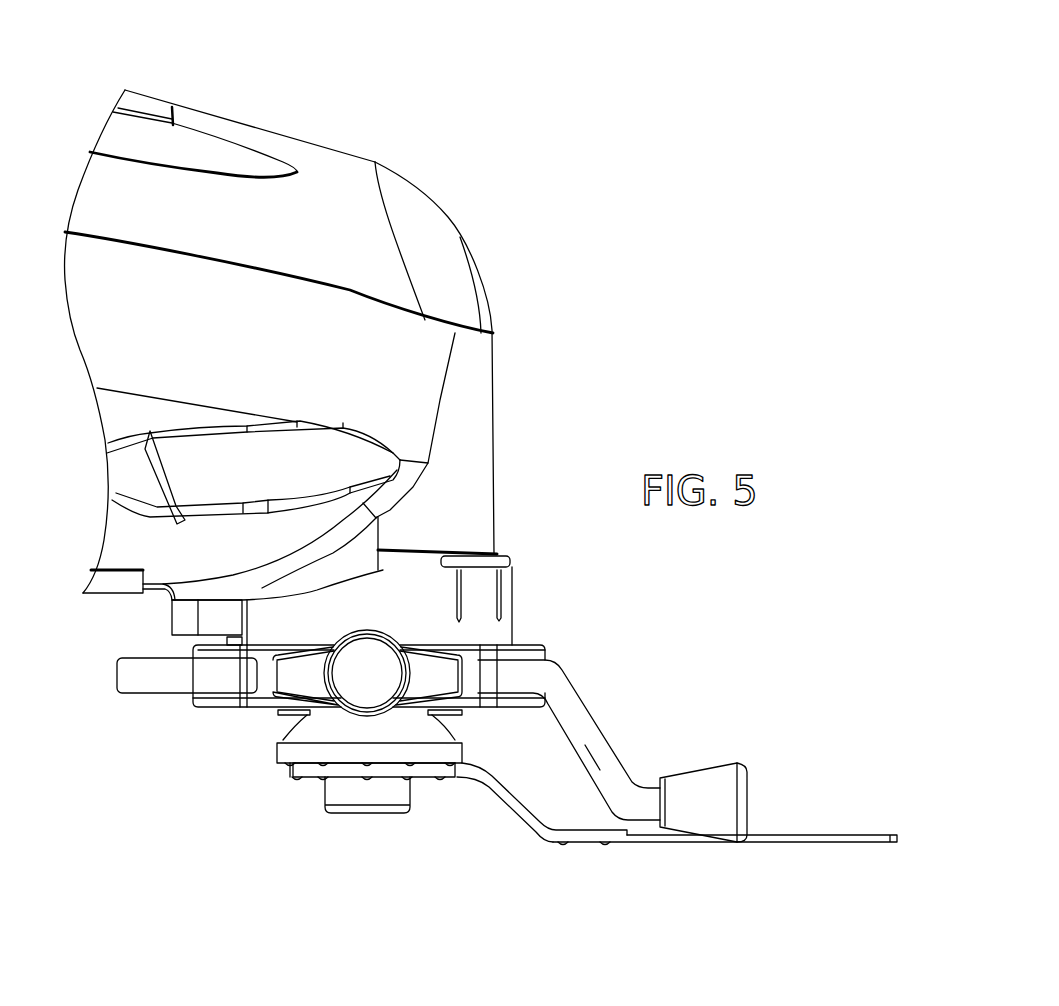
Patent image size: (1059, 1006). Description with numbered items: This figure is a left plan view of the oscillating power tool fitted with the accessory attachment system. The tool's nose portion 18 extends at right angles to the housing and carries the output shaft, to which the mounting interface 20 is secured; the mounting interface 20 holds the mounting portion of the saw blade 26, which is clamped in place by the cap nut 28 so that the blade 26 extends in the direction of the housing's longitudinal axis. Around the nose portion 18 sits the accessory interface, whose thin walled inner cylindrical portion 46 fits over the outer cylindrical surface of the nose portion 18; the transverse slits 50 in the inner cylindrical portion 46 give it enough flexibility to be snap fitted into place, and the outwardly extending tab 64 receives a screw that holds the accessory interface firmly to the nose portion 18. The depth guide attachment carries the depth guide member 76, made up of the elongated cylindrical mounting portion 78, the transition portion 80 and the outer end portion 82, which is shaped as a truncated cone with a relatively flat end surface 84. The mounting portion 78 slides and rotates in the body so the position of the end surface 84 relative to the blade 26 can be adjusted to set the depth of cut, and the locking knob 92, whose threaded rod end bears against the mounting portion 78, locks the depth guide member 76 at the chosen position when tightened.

The nose portion 18 is at (352, 152).
The mounting interface 20 is at (312, 731).
The saw blade 26 is at (517, 815).
The cap nut 28 is at (358, 790).
The inner cylindrical portion 46 is at (513, 582).
The transverse slits 50 is at (480, 603).
The tab 64 is at (183, 620).
The depth guide member 76 is at (593, 693).
The elongated cylindrical mounting portion 78 is at (153, 677).
The transition portion 80 is at (593, 737).
The outer end portion 82 is at (700, 798).
The end surface 84 is at (747, 800).
The locking knob 92 is at (367, 670).